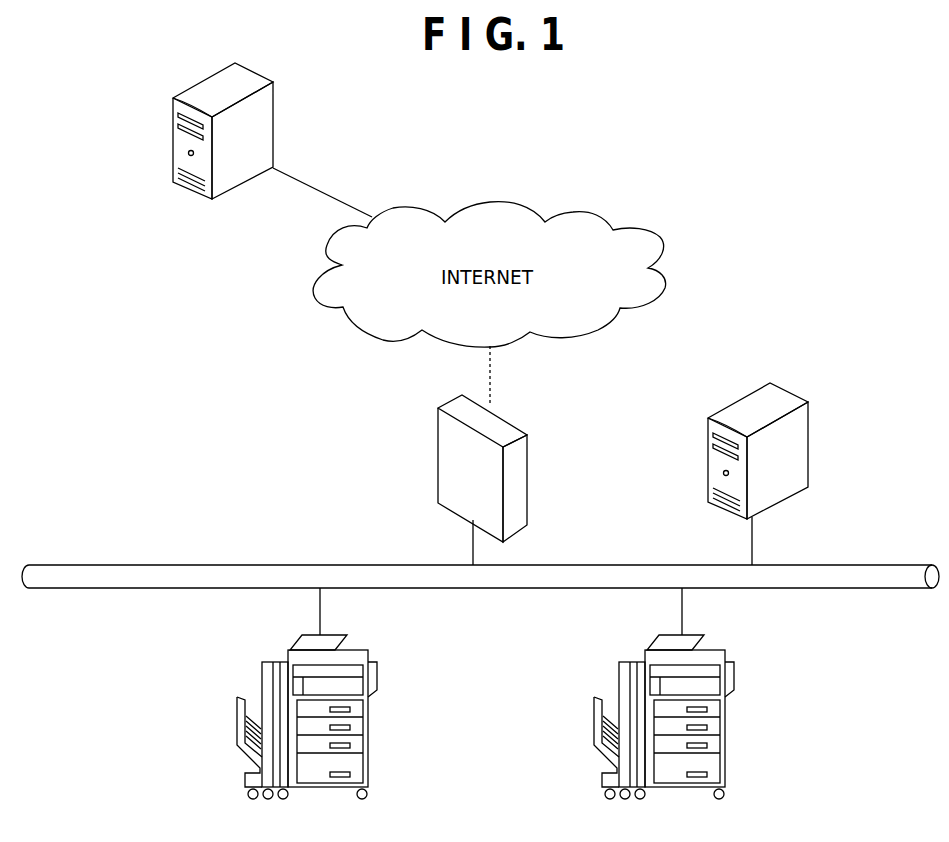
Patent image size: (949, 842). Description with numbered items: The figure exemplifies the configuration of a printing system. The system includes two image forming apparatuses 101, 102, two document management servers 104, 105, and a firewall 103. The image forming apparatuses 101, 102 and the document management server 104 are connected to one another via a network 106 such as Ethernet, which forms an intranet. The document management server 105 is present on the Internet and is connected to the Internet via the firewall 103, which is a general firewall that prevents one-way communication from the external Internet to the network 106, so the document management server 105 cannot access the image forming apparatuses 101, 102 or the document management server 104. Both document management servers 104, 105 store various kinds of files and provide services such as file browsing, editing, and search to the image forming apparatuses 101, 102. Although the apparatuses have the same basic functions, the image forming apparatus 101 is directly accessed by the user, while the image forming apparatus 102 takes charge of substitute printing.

The image forming apparatus 101 is at (378, 665).
The image forming apparatus 102 is at (732, 675).
The firewall 103 is at (513, 422).
The document management server 104 is at (750, 392).
The document management server 105 is at (212, 77).
The network 106 is at (858, 563).